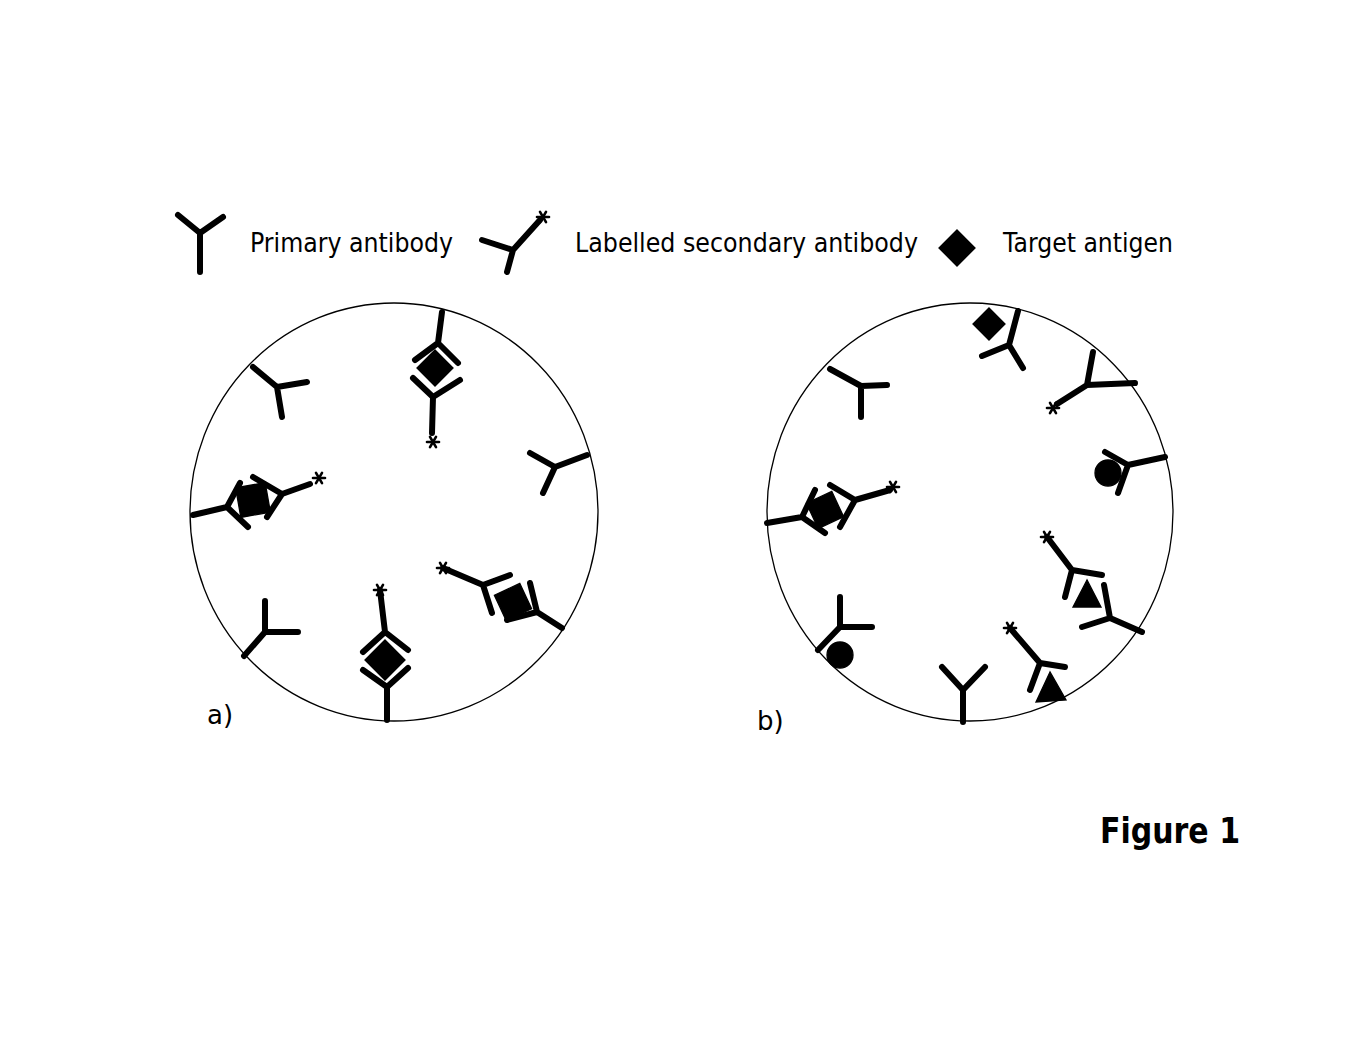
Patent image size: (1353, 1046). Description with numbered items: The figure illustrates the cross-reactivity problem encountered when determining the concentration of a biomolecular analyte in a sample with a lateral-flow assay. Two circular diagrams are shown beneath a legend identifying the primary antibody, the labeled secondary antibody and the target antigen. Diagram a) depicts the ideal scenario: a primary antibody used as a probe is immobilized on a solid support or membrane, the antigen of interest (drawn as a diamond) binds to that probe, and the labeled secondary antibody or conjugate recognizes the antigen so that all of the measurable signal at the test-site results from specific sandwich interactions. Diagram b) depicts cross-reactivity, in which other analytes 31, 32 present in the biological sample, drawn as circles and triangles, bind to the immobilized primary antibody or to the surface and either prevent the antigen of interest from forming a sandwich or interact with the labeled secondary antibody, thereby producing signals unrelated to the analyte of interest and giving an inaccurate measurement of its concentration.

The other analyte 31 is at (843, 670).
The other analyte 32 is at (1060, 690).